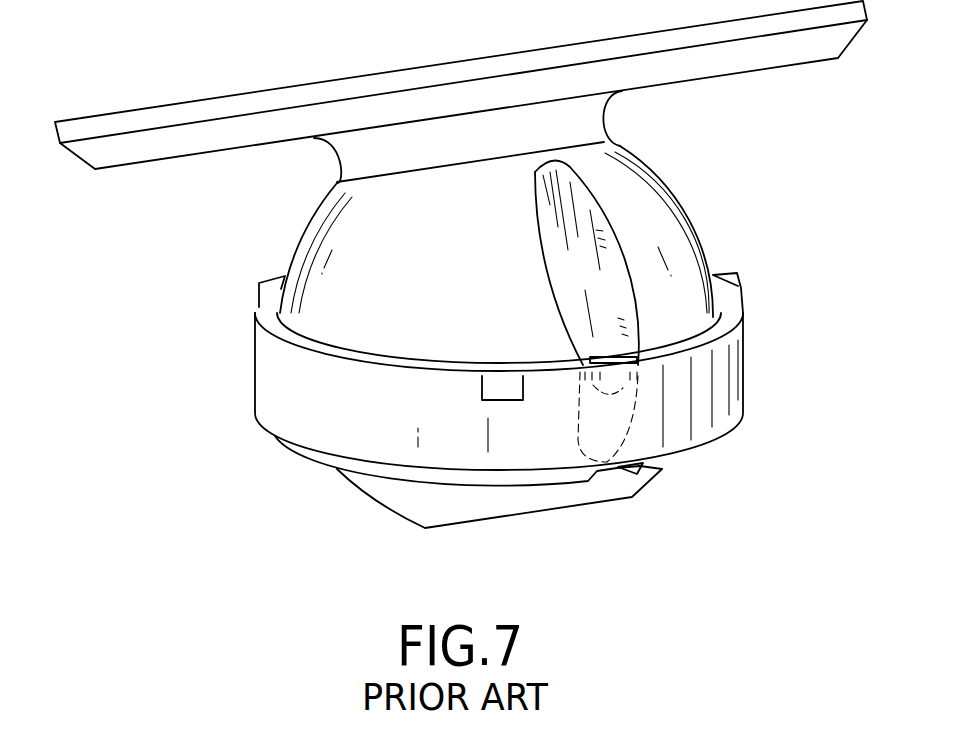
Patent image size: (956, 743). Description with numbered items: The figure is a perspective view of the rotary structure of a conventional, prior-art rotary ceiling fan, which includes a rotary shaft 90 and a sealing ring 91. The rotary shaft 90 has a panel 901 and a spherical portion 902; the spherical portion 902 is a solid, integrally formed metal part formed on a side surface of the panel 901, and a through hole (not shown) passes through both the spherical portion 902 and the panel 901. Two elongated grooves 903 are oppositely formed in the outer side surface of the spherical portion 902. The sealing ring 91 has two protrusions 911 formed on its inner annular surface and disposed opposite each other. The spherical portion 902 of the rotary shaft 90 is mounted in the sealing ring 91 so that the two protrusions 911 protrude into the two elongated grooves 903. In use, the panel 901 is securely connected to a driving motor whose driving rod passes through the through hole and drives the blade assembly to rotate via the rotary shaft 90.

The rotary shaft 90 is at (205, 73).
The panel 901 is at (117, 122).
The spherical portion 902 is at (320, 237).
The elongated grooves 903 is at (583, 213).
The sealing ring 91 is at (247, 377).
The protrusions 911 is at (607, 362).